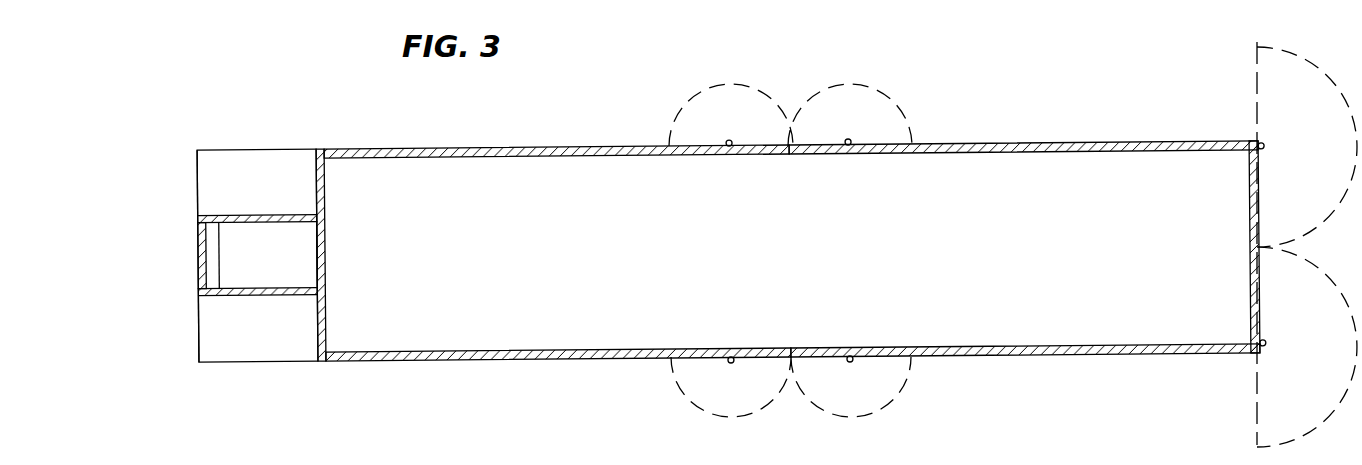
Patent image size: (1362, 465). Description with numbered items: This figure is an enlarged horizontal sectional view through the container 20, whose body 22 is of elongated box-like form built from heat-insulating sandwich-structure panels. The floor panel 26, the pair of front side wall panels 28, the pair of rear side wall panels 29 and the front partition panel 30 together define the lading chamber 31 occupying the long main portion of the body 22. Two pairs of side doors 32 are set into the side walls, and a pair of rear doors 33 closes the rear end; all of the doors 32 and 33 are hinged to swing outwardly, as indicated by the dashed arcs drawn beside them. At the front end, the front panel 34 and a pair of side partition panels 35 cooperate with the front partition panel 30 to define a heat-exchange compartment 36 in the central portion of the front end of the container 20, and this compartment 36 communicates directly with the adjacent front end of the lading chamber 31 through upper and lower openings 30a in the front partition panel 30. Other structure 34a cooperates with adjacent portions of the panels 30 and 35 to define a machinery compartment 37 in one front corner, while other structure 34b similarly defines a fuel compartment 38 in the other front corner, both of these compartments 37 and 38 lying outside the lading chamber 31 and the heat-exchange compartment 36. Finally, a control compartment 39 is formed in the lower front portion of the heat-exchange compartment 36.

The container 20 is at (806, 66).
The body 22 is at (795, 244).
The floor panel 26 is at (1062, 253).
The front side wall panels 28 is at (555, 147).
The rear side wall panels 29 is at (1017, 145).
The front partition panel 30 is at (322, 312).
The upper and lower openings 30a is at (322, 267).
The lading chamber 31 is at (799, 294).
The side doors 32 is at (763, 156).
The rear doors 33 is at (1250, 197).
The front panel 34 is at (324, 249).
The other structure 34a is at (198, 330).
The other structure 34b is at (198, 182).
The side partition panels 35 is at (262, 213).
The heat-exchange compartment 36 is at (292, 256).
The machinery compartment 37 is at (242, 345).
The fuel compartment 38 is at (243, 203).
The control compartment 39 is at (212, 268).